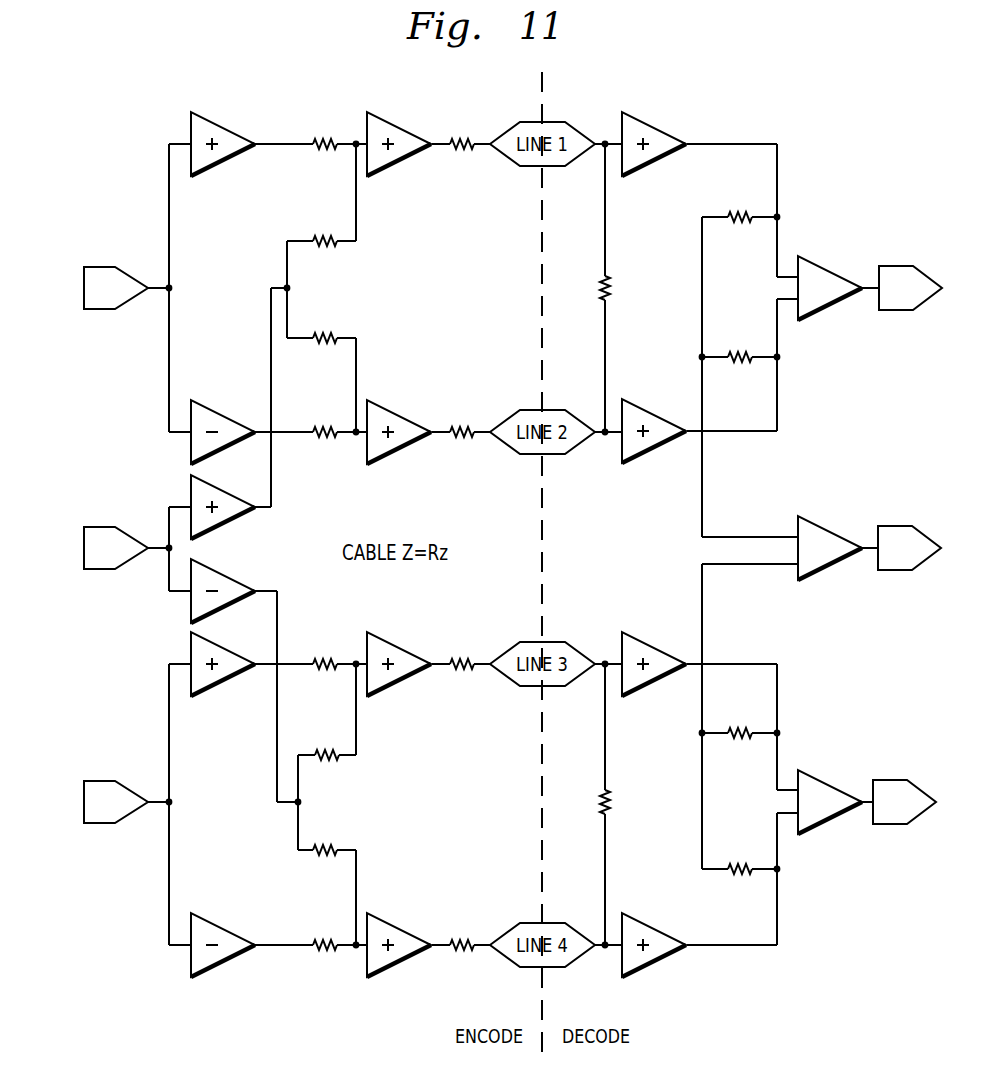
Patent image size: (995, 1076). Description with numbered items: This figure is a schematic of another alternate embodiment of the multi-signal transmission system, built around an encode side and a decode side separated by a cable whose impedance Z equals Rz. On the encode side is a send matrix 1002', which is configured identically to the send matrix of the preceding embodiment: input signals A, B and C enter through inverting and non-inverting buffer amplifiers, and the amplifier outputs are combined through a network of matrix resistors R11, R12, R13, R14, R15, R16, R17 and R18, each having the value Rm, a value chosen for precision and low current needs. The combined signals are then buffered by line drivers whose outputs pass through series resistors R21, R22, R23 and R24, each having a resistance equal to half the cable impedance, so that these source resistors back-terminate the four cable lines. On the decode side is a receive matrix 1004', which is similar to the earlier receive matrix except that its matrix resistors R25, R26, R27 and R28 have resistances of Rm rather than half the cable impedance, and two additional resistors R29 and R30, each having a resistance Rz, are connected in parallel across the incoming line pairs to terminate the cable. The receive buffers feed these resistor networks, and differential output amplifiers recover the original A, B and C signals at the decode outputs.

The send matrix 1002' is at (287, 508).
The receive matrix 1004' is at (768, 508).
The resistor R11 is at (321, 158).
The resistor R12 is at (322, 255).
The resistor R13 is at (322, 352).
The resistor R14 is at (322, 446).
The resistor R15 is at (320, 678).
The resistor R16 is at (333, 769).
The resistor R17 is at (322, 864).
The resistor R18 is at (322, 959).
The resistor R21 is at (461, 135).
The resistor R22 is at (461, 422).
The resistor R23 is at (457, 678).
The resistor R24 is at (457, 959).
The resistor R25 is at (737, 229).
The resistor R26 is at (737, 369).
The resistor R27 is at (737, 745).
The resistor R28 is at (737, 881).
The resistor R29 is at (612, 290).
The resistor R30 is at (612, 805).